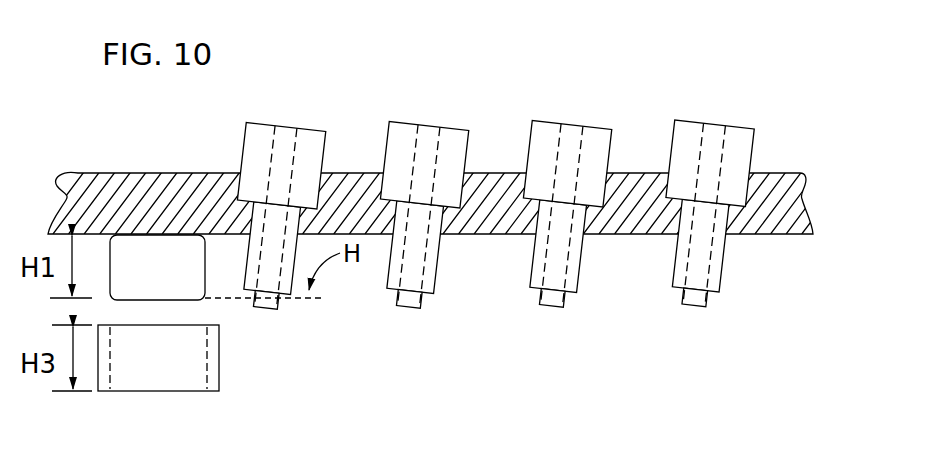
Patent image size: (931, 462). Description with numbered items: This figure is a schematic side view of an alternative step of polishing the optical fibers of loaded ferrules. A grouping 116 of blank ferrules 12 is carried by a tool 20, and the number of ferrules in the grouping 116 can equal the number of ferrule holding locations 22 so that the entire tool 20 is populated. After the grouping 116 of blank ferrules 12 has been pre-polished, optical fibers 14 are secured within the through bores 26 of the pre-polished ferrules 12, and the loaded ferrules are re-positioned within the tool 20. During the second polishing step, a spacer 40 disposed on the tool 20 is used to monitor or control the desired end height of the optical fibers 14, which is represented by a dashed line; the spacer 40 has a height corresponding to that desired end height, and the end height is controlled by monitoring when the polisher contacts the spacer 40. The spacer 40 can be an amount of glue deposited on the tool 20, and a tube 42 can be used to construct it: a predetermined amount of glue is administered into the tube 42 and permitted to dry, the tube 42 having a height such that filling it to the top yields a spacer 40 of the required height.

The grouping of blank ferrules 116 is at (507, 198).
The blank ferrule 12 is at (435, 265).
The optical fiber 14 is at (270, 305).
The tool 20 is at (778, 168).
The ferrule holding location 22 is at (609, 174).
The through bore 26 is at (547, 245).
The spacer 40 is at (170, 277).
The tube 42 is at (218, 363).